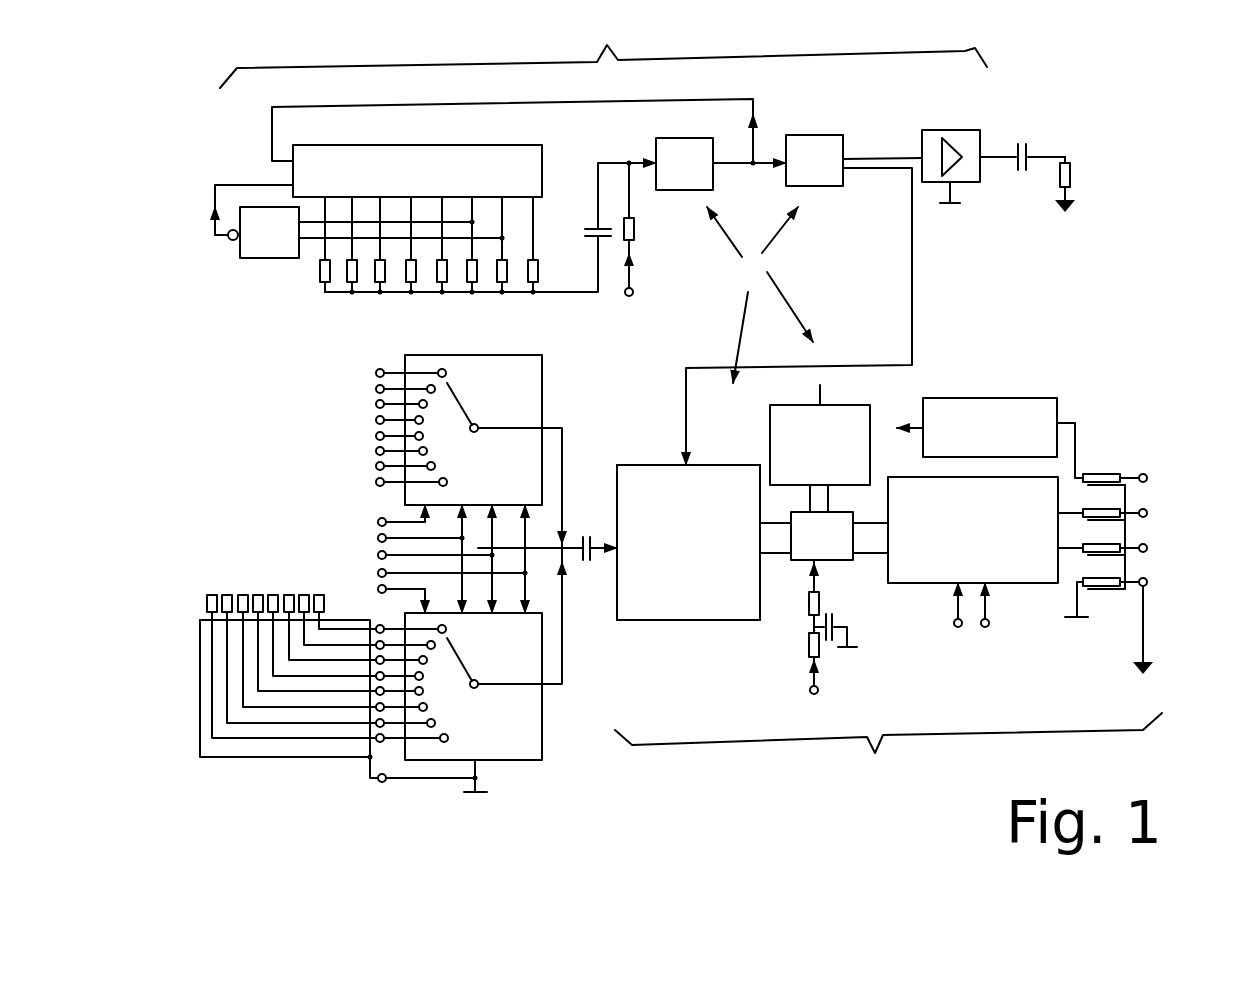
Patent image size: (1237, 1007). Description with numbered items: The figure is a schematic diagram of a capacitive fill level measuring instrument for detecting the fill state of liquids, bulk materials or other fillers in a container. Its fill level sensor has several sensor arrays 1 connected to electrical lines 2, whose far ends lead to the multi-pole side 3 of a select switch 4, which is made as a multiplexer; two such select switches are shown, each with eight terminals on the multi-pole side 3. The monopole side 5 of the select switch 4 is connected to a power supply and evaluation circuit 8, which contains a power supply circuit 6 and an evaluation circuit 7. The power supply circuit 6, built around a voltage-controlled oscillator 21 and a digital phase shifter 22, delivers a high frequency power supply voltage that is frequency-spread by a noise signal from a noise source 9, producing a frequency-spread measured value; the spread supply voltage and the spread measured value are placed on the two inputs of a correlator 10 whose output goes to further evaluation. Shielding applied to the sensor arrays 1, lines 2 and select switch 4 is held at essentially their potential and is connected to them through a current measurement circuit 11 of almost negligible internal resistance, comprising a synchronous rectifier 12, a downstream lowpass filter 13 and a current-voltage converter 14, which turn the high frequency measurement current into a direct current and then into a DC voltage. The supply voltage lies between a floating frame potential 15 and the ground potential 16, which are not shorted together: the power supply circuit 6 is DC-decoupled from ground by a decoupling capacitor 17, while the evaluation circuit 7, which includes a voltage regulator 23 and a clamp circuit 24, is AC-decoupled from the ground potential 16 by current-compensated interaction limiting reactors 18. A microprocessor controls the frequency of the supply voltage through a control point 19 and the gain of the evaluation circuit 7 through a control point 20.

The sensor arrays 1 is at (215, 596).
The electrical lines 2 is at (207, 770).
The multi-pole side 3 is at (430, 346).
The select switch 4 is at (512, 484).
The monopole side 5 is at (495, 413).
The power supply circuit 6 is at (603, 48).
The evaluation circuit 7 is at (888, 754).
The power supply and evaluation circuit 8 is at (760, 295).
The noise source 9 is at (305, 283).
The correlator 10 is at (714, 535).
The current measurement circuit 11 is at (875, 595).
The synchronous rectifier 12 is at (714, 590).
The lowpass filter 13 is at (841, 557).
The current-voltage converter 14 is at (993, 554).
The frame potential 15 is at (950, 206).
The ground potential 16 is at (1069, 206).
The decoupling capacitor 17 is at (1027, 142).
The current-compensated interaction limiting reactors 18 is at (1112, 470).
The control point 19 is at (629, 296).
The control point 20 is at (985, 627).
The voltage-controlled oscillator 21 is at (668, 152).
The digital phase shifter 22 is at (812, 146).
The voltage regulator 23 is at (1001, 455).
The clamp circuit 24 is at (840, 462).